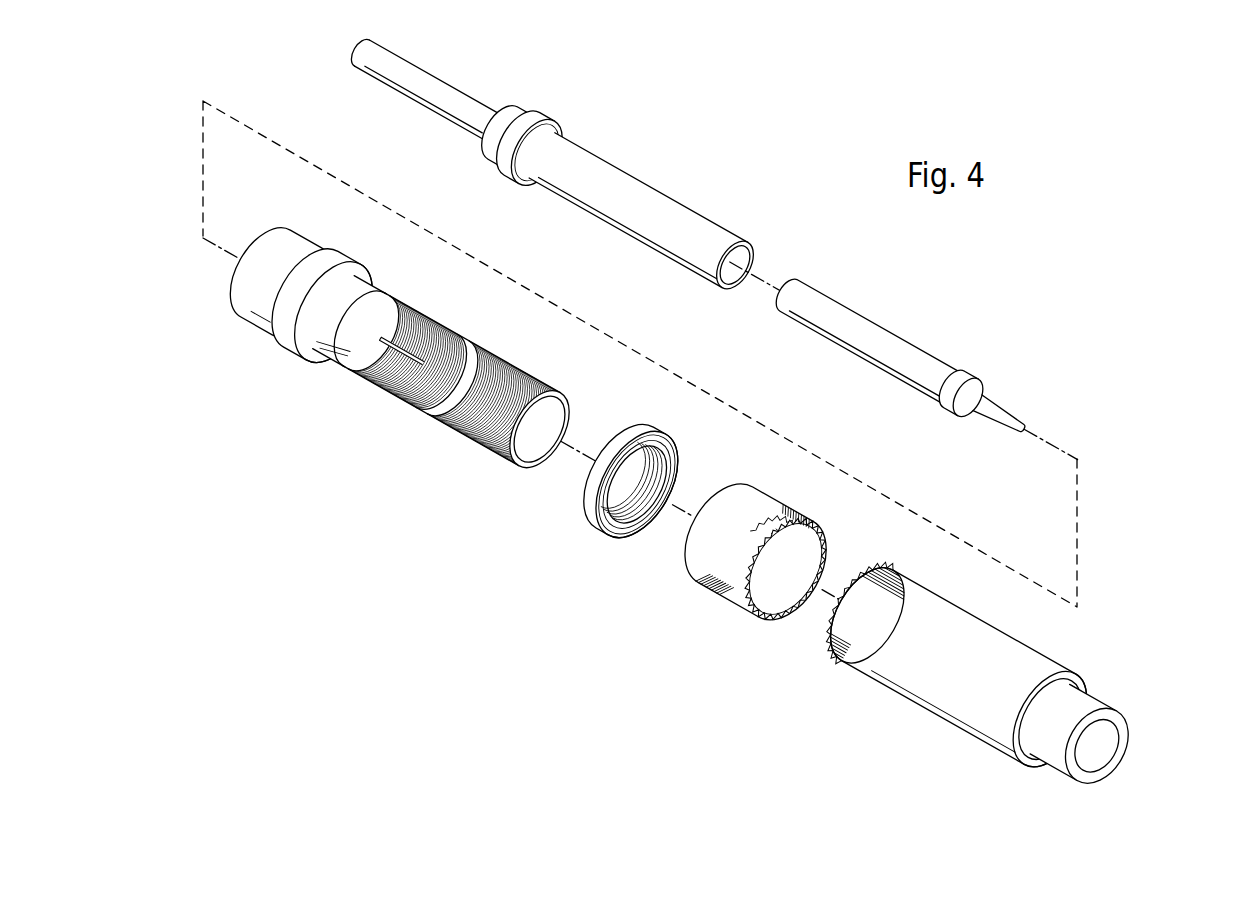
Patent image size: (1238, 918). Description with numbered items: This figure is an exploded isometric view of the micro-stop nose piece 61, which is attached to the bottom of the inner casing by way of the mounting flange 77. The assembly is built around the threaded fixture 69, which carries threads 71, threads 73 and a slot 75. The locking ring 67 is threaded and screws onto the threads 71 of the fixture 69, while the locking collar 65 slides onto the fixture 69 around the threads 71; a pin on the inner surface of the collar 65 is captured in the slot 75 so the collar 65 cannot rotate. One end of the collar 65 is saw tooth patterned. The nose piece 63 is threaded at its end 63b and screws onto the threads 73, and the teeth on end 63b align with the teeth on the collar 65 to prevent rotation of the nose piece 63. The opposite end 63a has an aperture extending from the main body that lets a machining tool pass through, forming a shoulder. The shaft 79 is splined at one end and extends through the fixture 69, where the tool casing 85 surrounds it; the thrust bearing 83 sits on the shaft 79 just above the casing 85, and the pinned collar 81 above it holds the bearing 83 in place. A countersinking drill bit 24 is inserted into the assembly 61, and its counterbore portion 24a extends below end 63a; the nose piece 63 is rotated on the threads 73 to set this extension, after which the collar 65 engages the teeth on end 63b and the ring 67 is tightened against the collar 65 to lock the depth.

The micro-stop nose piece 61 is at (509, 652).
The nose piece 63 is at (1014, 672).
The end of nose piece 63a is at (1128, 711).
The threaded end of nose piece 63b is at (885, 605).
The locking collar 65 is at (725, 585).
The locking ring 67 is at (612, 535).
The threaded fixture 69 is at (340, 355).
The threads 71 is at (393, 397).
The threads 73 is at (477, 437).
The slot 75 is at (424, 340).
The mounting flange 77 is at (287, 346).
The shaft 79 is at (455, 88).
The pinned collar 81 is at (514, 107).
The thrust bearing 83 is at (540, 116).
The tool casing 85 is at (668, 207).
The countersinking drill bit 24 is at (863, 327).
The counterbore portion 24a is at (958, 380).